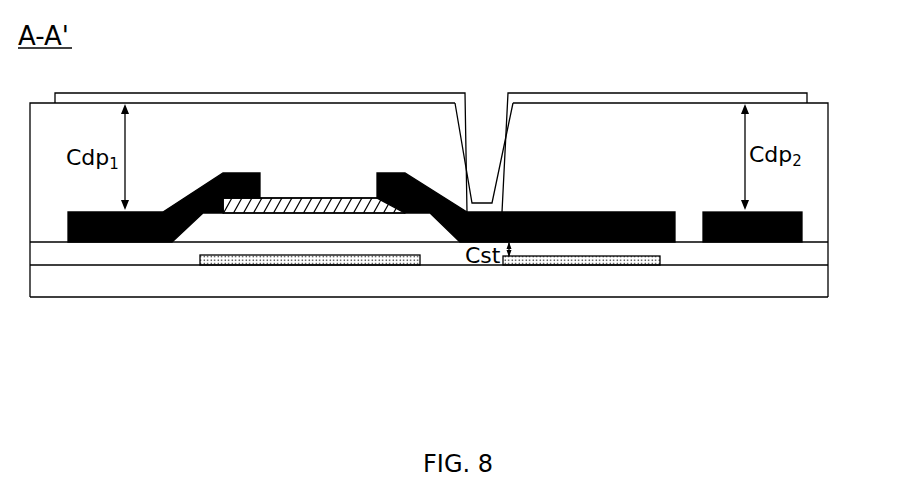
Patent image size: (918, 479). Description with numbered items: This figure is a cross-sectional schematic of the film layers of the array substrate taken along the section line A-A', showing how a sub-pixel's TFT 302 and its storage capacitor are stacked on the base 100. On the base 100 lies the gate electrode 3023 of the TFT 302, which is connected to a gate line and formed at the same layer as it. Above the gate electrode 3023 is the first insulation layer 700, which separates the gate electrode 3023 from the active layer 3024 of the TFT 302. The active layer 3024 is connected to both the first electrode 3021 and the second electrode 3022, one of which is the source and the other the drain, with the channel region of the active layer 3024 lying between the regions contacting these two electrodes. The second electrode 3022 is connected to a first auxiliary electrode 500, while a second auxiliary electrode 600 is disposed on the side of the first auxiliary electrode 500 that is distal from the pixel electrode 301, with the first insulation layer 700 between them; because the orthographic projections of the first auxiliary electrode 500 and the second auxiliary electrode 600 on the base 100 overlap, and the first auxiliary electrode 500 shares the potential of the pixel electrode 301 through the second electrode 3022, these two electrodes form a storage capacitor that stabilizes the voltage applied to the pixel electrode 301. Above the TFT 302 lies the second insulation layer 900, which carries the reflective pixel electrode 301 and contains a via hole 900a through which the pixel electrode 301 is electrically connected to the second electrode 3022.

The base 100 is at (803, 283).
The first insulation layer 700 is at (803, 253).
The second insulation layer 900 is at (803, 142).
The via hole 900a is at (508, 166).
The reflective pixel electrode 301 is at (803, 98).
The first auxiliary electrode 500 is at (665, 250).
The second auxiliary electrode 600 is at (575, 273).
The TFT 302 is at (388, 391).
The first electrode 3021 is at (237, 213).
The second electrode 3022 is at (385, 213).
The gate electrode 3023 is at (337, 266).
The active layer 3024 is at (277, 213).